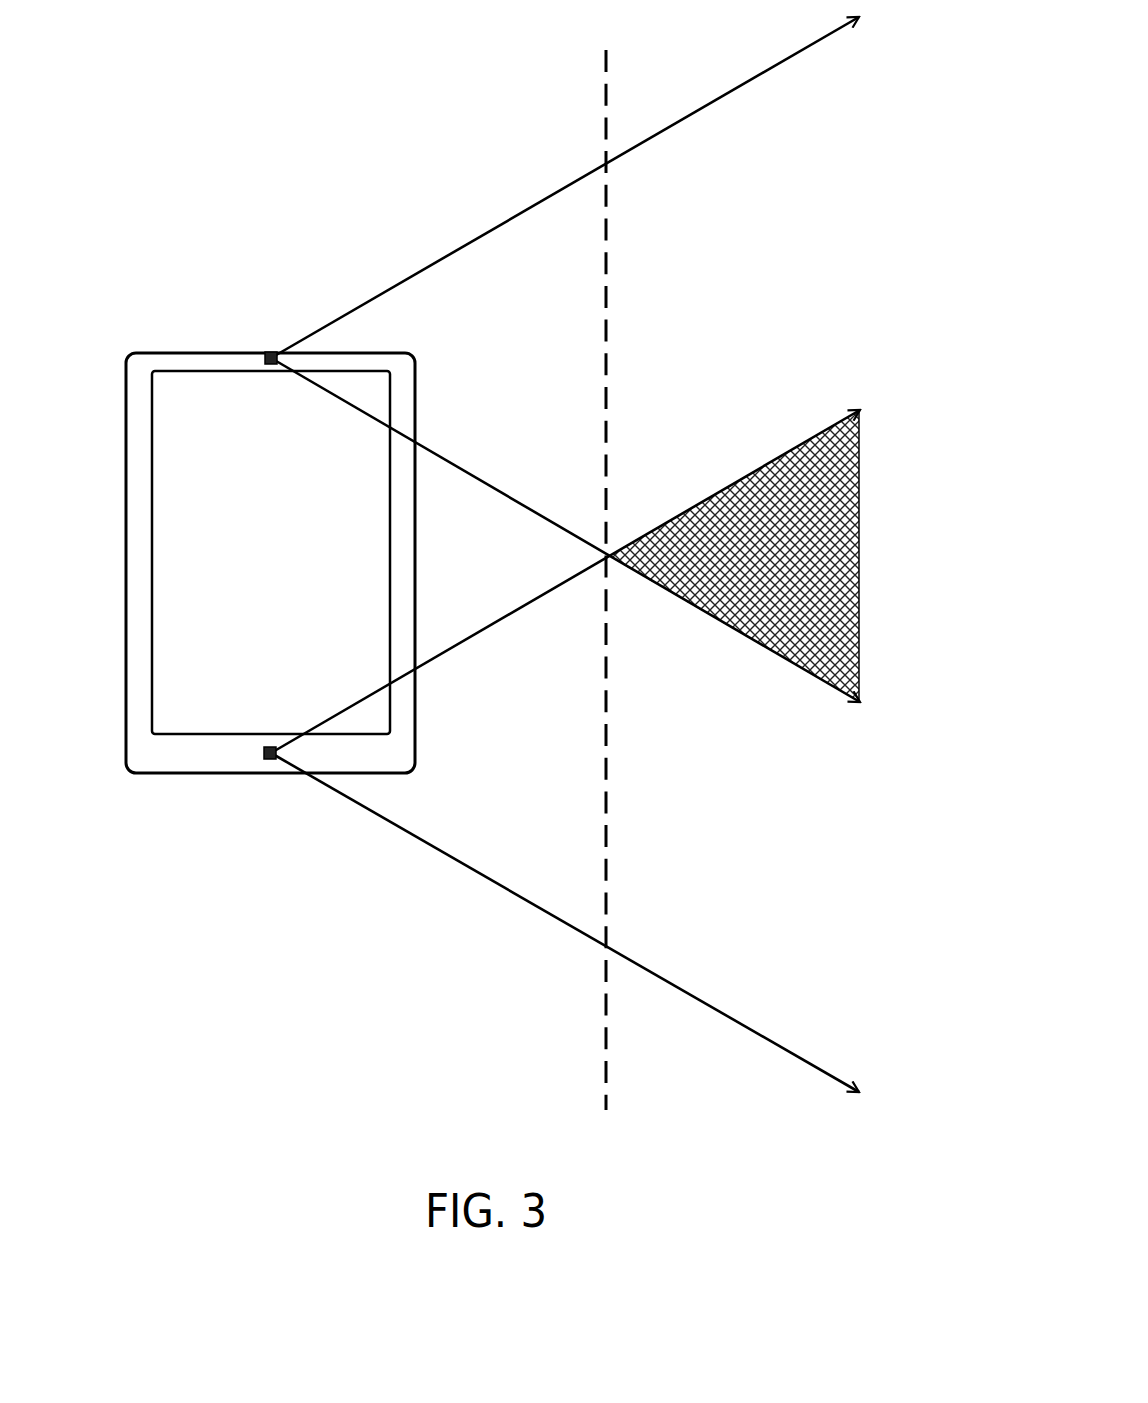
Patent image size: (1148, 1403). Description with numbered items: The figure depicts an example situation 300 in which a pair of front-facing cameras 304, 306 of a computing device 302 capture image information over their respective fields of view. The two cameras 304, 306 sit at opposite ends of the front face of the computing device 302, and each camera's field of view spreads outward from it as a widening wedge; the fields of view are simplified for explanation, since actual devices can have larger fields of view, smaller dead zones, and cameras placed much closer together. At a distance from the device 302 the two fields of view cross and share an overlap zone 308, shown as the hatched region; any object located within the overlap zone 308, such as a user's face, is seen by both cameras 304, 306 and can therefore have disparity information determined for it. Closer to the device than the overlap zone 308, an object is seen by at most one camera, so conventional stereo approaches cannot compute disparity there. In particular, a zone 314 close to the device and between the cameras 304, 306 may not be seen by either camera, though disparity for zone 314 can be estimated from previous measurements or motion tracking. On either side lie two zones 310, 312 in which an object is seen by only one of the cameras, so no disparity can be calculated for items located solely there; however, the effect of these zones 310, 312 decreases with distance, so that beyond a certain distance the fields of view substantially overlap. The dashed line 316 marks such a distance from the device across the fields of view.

The situation 300 is at (183, 142).
The computing device 302 is at (147, 352).
The front-facing camera 304 is at (268, 352).
The front-facing camera 306 is at (270, 760).
The overlap zone 308 is at (758, 555).
The zone 310 is at (648, 326).
The zone 312 is at (688, 817).
The zone 314 is at (362, 556).
The threshold distance line 316 is at (607, 1009).